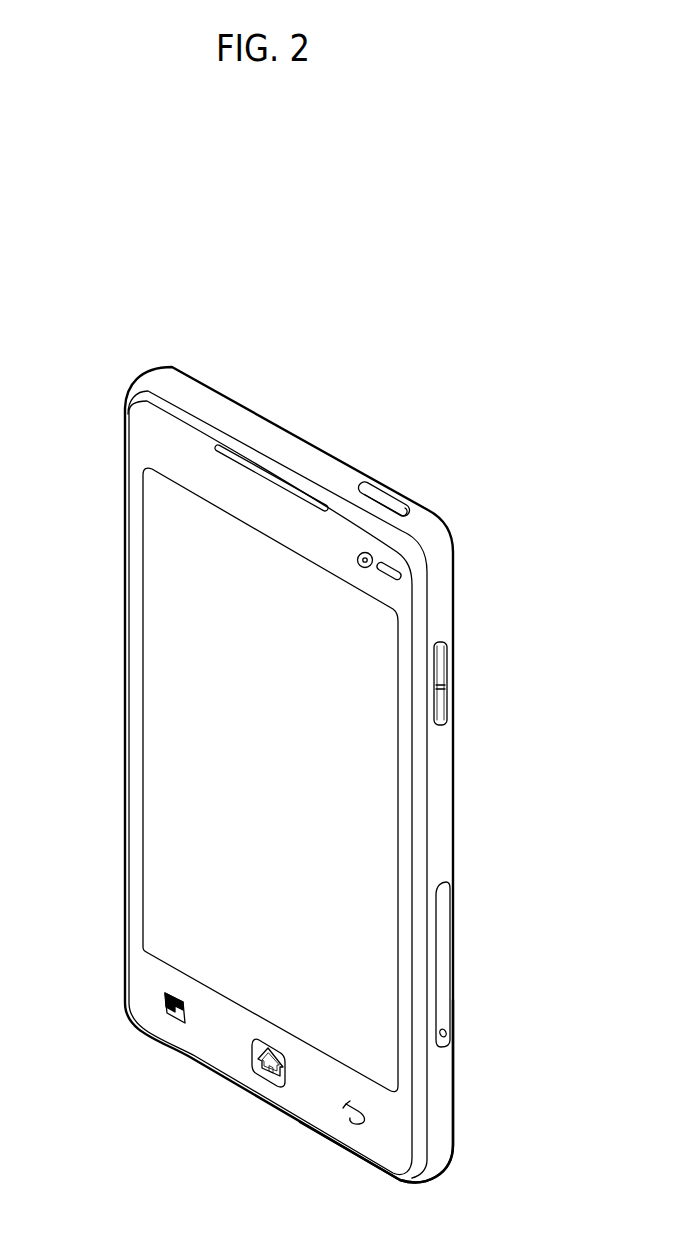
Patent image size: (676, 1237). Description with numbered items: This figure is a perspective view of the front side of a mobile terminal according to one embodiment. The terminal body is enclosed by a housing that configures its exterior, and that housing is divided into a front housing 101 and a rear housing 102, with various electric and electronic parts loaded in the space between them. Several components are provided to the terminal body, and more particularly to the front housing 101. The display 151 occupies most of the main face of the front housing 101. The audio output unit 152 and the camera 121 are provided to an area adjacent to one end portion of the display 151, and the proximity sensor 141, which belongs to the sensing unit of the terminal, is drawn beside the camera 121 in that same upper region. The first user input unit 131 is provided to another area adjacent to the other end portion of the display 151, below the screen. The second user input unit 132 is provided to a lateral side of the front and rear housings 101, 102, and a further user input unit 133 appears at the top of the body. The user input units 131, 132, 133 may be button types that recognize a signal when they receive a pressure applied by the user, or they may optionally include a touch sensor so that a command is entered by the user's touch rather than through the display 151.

The front housing 101 is at (417, 1132).
The rear housing 102 is at (442, 550).
The camera 121 is at (373, 557).
The first user input unit 131 is at (260, 1070).
The second user input unit 132 is at (443, 672).
The user input unit 133 is at (386, 497).
The proximity sensor 141 is at (397, 580).
The display 151 is at (160, 744).
The audio output unit 152 is at (267, 477).